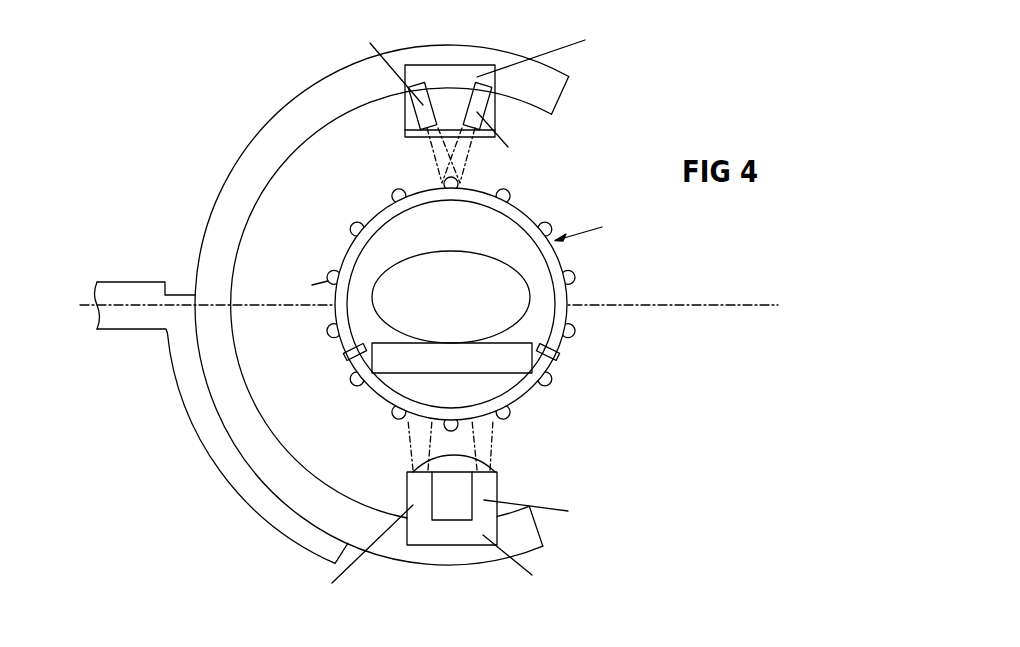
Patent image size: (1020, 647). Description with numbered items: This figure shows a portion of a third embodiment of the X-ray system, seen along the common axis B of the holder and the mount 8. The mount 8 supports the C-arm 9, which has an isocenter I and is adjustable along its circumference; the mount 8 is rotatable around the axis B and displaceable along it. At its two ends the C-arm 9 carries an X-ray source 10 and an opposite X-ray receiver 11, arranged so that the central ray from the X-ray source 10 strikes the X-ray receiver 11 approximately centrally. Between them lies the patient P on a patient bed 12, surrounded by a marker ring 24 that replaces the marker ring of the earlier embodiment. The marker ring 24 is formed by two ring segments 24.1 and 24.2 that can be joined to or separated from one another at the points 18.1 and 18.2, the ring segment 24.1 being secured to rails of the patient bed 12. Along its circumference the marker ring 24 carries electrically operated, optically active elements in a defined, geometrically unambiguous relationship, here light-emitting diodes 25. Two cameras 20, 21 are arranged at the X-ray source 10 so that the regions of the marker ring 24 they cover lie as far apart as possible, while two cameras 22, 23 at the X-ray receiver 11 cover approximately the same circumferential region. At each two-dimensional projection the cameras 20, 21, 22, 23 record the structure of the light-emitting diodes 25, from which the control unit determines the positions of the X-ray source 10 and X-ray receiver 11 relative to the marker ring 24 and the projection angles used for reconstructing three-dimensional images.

The mount 8 is at (128, 295).
The C-arm 9 is at (290, 128).
The X-ray source 10 is at (485, 513).
The X-ray receiver 11 is at (491, 92).
The patient bed 12 is at (480, 360).
The joining point 18.1 is at (562, 351).
The joining point 18.2 is at (347, 362).
The camera 20 is at (423, 497).
The camera 21 is at (485, 493).
The camera 22 is at (415, 105).
The camera 23 is at (478, 107).
The marker ring 24 is at (536, 304).
The ring segment 24.1 is at (530, 397).
The ring segment 24.2 is at (522, 217).
The light-emitting diodes 25 is at (393, 197).
The patient P is at (448, 250).
The isocenter I is at (452, 305).
The axis B is at (698, 305).